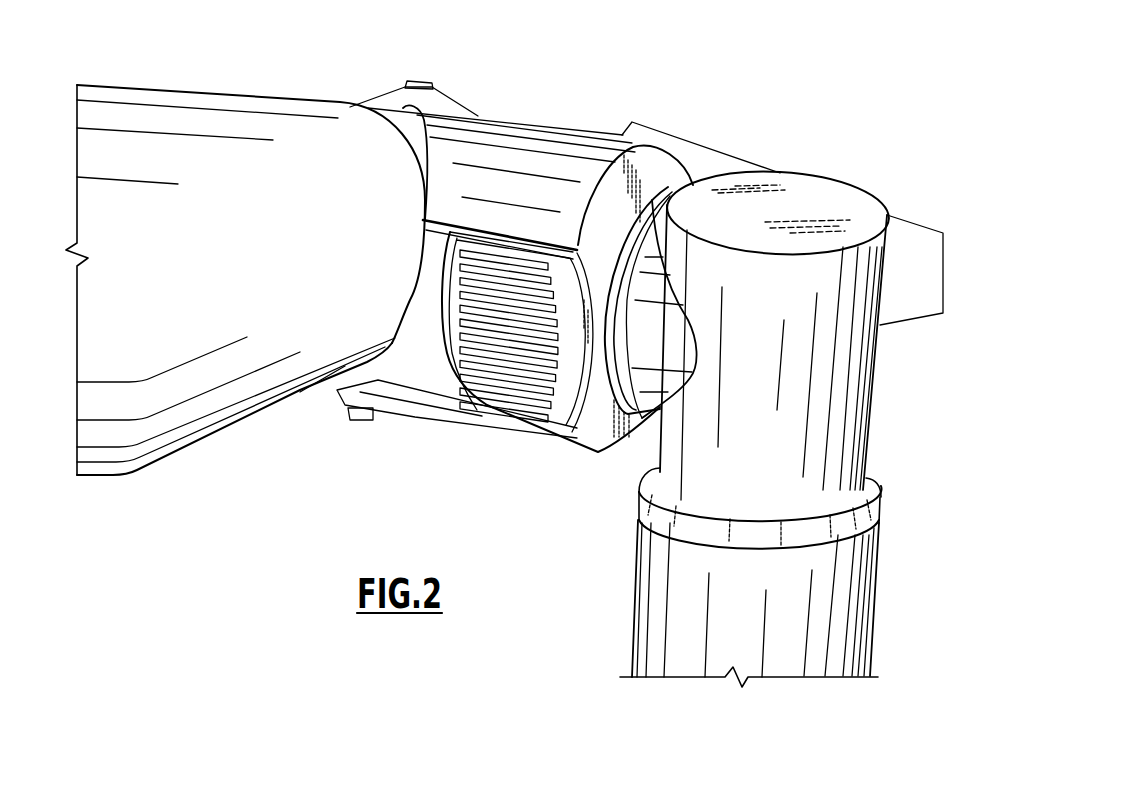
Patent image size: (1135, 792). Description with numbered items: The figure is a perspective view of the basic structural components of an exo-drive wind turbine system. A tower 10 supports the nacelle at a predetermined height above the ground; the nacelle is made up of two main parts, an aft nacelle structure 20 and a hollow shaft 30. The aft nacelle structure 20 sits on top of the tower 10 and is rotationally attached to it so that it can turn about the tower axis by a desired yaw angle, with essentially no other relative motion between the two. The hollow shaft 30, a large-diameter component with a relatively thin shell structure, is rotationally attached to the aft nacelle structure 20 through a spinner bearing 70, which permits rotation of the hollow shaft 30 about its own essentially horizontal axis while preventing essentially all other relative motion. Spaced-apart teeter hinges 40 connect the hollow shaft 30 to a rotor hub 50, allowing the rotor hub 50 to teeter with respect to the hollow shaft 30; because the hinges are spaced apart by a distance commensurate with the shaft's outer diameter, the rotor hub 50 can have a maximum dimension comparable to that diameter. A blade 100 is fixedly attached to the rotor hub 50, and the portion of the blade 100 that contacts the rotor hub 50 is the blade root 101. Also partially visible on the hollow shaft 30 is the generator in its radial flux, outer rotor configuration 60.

The tower 10 is at (632, 632).
The aft nacelle structure 20 is at (805, 200).
The hollow shaft 30 is at (522, 137).
The teeter hinges 40 is at (418, 80).
The rotor hub 50 is at (400, 127).
The radial flux, outer rotor configuration 60 is at (490, 372).
The spinner bearing 70 is at (655, 230).
The blade 100 is at (172, 92).
The blade root 101 is at (323, 397).